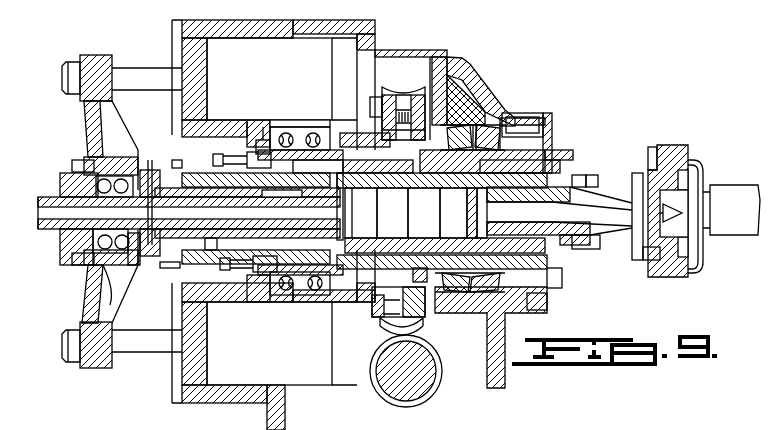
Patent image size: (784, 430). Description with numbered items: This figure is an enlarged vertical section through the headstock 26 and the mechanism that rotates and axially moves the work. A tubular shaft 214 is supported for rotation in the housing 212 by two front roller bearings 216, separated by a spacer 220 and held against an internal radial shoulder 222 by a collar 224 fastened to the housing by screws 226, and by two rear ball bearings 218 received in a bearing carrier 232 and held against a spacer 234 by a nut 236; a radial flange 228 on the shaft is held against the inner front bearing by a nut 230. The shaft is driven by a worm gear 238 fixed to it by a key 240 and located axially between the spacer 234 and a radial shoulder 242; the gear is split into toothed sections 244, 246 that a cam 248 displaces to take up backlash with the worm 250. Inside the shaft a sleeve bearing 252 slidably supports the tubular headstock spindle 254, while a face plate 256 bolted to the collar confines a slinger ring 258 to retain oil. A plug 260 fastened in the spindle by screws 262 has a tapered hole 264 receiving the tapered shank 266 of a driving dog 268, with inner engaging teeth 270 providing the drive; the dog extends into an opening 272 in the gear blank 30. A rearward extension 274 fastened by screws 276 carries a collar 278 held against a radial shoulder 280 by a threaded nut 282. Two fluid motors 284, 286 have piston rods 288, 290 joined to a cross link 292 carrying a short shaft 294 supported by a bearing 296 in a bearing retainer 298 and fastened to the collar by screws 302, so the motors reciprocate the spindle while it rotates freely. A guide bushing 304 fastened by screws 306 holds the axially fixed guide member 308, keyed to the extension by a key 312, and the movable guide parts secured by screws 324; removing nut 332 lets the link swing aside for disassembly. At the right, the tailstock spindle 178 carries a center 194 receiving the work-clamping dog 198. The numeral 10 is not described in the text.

The fastener 10 is at (180, 150).
The headstock 26 is at (537, 80).
The gear blank 30 is at (675, 144).
The tailstock spindle 178 is at (730, 192).
The center 194 is at (703, 184).
The work-clamping dog 198 is at (700, 165).
The housing 212 is at (468, 80).
The tubular shaft 214 is at (487, 109).
The front bearings 216 is at (483, 130).
The rear bearings 218 is at (310, 124).
The spacer 220 is at (473, 320).
The internal radial shoulder 222 is at (477, 97).
The collar 224 is at (517, 124).
The screws 226 is at (543, 119).
The radial flange 228 is at (423, 273).
The nut 230 is at (528, 146).
The bearing carrier 232 is at (264, 148).
The spacer 234 is at (331, 147).
The nut 236 is at (272, 154).
The worm gear 238 is at (423, 86).
The key 240 is at (384, 164).
The radial shoulder 242 is at (419, 184).
The toothed section 244 is at (412, 316).
The toothed section 246 is at (384, 317).
The cam 248 is at (377, 300).
The worm 250 is at (392, 400).
The sleeve bearing 252 is at (388, 186).
The headstock spindle 254 is at (560, 171).
The face plate 256 is at (552, 293).
The slinger ring 258 is at (550, 278).
The plug 260 is at (580, 178).
The screws 262 is at (598, 181).
The tapered hole 264 is at (587, 198).
The tapered shank 266 is at (588, 250).
The driving dog 268 is at (640, 260).
The inner engaging teeth 270 is at (583, 217).
The opening 272 is at (655, 170).
The rearward extension 274 is at (256, 260).
The screws 276 is at (350, 231).
The collar 278 is at (174, 274).
The radial shoulder 280 is at (212, 241).
The threaded nut 282 is at (150, 165).
The fluid motor 284 is at (233, 36).
The fluid motor 286 is at (203, 403).
The piston rod 288 is at (126, 74).
The piston rod 290 is at (135, 340).
The cross link 292 is at (86, 136).
The short shaft 294 is at (50, 231).
The bearing 296 is at (117, 289).
The bearing retainer 298 is at (68, 183).
The screws 302 is at (176, 168).
The guide bushing 304 is at (283, 262).
The screws 306 is at (213, 158).
The axially fixed guide member 308 is at (224, 194).
The key 312 is at (258, 201).
The screws 324 is at (288, 192).
The nut 332 is at (62, 68).